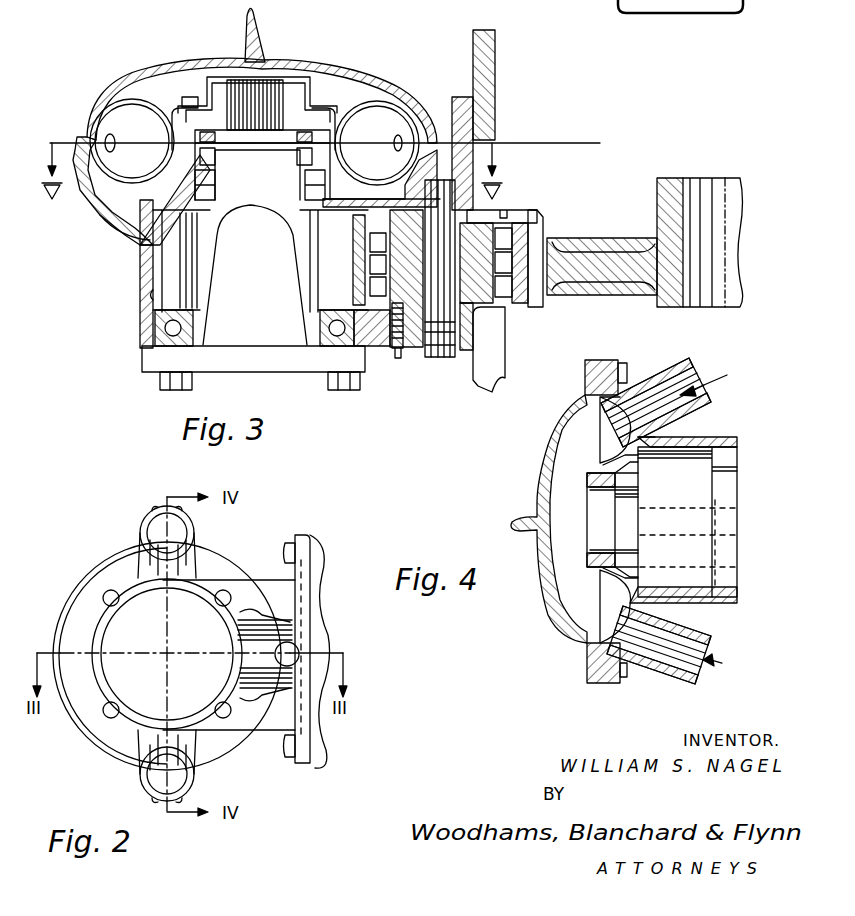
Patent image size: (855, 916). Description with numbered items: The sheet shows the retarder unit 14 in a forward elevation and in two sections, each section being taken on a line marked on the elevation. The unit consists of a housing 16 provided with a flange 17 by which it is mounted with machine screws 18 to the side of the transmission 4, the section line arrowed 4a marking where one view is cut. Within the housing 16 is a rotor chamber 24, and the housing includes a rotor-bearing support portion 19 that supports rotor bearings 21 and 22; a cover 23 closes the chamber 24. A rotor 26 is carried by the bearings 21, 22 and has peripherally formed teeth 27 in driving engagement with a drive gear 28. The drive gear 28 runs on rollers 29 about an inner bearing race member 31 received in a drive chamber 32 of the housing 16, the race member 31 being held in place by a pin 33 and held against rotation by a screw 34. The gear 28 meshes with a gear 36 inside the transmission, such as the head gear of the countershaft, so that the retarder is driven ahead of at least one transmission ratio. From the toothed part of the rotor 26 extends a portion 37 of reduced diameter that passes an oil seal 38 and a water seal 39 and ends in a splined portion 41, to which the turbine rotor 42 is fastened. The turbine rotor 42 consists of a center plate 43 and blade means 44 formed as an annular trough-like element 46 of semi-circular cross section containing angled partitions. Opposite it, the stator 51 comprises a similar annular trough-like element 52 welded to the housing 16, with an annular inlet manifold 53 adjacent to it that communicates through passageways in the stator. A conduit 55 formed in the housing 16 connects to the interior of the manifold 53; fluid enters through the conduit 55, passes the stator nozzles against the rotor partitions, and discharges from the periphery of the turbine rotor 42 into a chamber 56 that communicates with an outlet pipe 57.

In FIG. 3, the transmission 4 is at (495, 65).
In FIG. 2, the transmission 4 is at (318, 553).
In FIG. 3, the section line 4a is at (495, 143).
In FIG. 3, the retarder unit 14 is at (275, 32).
In FIG. 2, the retarder unit 14 is at (42, 608).
In FIG. 3, the housing 16 is at (377, 352).
In FIG. 4, the housing 16 is at (700, 433).
In FIG. 2, the housing 16 is at (258, 574).
In FIG. 3, the flange 17 is at (460, 97).
In FIG. 2, the flange 17 is at (316, 536).
In FIG. 2, the machine screws 18 is at (292, 540).
In FIG. 3, the rotor-bearing support portion 19 is at (145, 320).
In FIG. 4, the rotor-bearing support portion 19 is at (737, 452).
In FIG. 3, the rotor bearing 21 is at (203, 335).
In FIG. 3, the rotor bearing 22 is at (210, 190).
In FIG. 3, the cover 23 is at (221, 367).
In FIG. 3, the rotor chamber 24 is at (151, 294).
In FIG. 4, the rotor chamber 24 is at (722, 443).
In FIG. 3, the rotor 26 is at (180, 265).
In FIG. 3, the teeth 27 is at (160, 250).
In FIG. 3, the drive gear 28 is at (532, 224).
In FIG. 3, the rollers 29 is at (504, 298).
In FIG. 3, the inner bearing race member 31 is at (525, 212).
In FIG. 3, the drive chamber 32 is at (489, 349).
In FIG. 3, the pin 33 is at (488, 203).
In FIG. 3, the screw 34 is at (399, 356).
In FIG. 3, the gear 36 is at (560, 240).
In FIG. 3, the portion of reduced diameter 37 is at (263, 137).
In FIG. 3, the oil seal 38 is at (217, 160).
In FIG. 3, the water seal 39 is at (290, 145).
In FIG. 3, the splined portion 41 is at (262, 92).
In FIG. 3, the turbine rotor 42 is at (335, 100).
In FIG. 3, the center plate 43 is at (196, 78).
In FIG. 3, the blade means 44 is at (405, 112).
In FIG. 3, the annular trough-like element 46 is at (117, 112).
In FIG. 3, the stator 51 is at (95, 180).
In FIG. 3, the annular trough-like element 52 is at (80, 138).
In FIG. 3, the annular inlet manifold 53 is at (108, 222).
In FIG. 4, the annular inlet manifold 53 is at (600, 436).
In FIG. 4, the conduit 55 is at (633, 388).
In FIG. 2, the conduit 55 is at (210, 547).
In FIG. 3, the chamber 56 is at (365, 93).
In FIG. 4, the chamber 56 is at (625, 616).
In FIG. 4, the outlet pipe 57 is at (690, 684).
In FIG. 2, the outlet pipe 57 is at (148, 762).